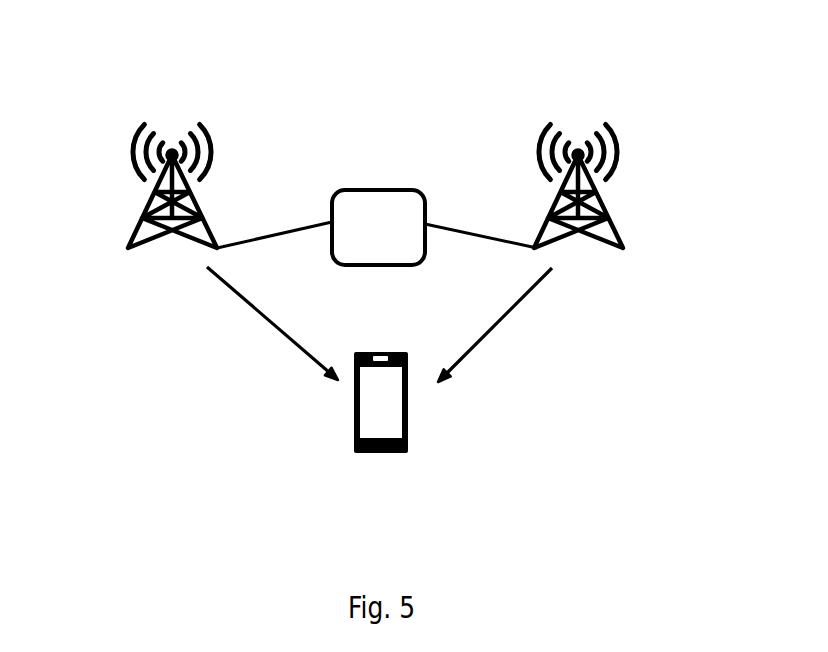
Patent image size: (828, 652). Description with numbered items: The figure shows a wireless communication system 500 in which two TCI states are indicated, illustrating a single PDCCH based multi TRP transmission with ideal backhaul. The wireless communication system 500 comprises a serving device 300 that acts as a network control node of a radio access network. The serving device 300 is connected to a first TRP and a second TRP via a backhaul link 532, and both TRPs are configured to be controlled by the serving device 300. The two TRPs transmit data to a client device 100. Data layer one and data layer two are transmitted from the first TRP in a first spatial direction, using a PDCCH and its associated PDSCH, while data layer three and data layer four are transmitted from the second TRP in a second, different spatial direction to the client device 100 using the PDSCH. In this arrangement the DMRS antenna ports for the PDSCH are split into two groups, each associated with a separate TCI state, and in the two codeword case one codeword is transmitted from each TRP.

The wireless communication system 500 is at (602, 40).
The serving device 300 is at (378, 227).
The backhaul link 532 is at (298, 221).
The client device 100 is at (388, 458).